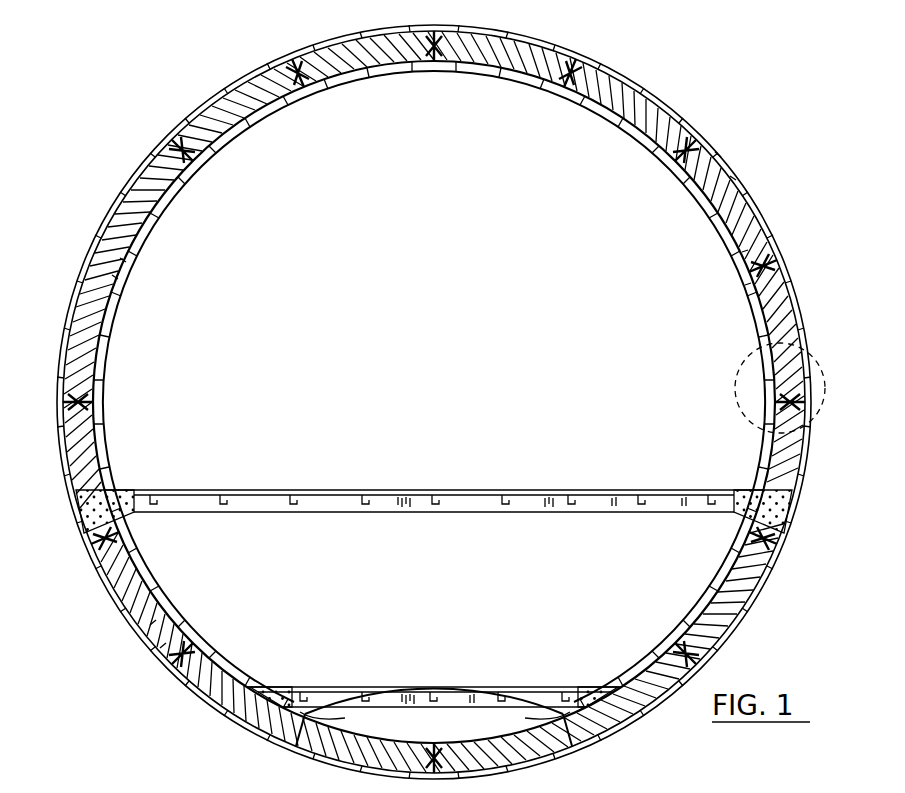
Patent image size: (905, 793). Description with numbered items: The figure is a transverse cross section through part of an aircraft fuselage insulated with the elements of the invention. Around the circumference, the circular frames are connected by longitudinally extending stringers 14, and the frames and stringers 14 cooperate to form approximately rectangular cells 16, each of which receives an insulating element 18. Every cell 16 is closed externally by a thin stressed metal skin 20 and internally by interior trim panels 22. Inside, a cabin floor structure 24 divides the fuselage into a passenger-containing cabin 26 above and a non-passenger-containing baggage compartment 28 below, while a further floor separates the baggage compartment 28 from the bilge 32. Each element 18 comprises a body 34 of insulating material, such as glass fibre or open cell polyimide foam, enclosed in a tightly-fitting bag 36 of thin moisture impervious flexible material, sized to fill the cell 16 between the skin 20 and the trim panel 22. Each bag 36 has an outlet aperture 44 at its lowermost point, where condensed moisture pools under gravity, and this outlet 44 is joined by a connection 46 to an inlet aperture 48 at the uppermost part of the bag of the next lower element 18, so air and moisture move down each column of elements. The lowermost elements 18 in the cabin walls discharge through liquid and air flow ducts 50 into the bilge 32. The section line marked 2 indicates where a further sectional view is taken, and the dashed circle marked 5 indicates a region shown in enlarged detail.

The stringer 14 is at (158, 150).
The cell 16 is at (442, 36).
The insulating element 18 is at (410, 66).
The stressed metal skin 20 is at (118, 197).
The interior trim panel 22 is at (150, 218).
The cabin floor structure 24 is at (333, 488).
The passenger-containing cabin 26 is at (257, 423).
The baggage compartment 28 is at (257, 561).
The bilge 32 is at (383, 715).
The body 34 is at (120, 258).
The bag 36 is at (112, 275).
The outlet aperture 44 is at (742, 252).
The connection 46 is at (289, 90).
The inlet aperture 48 is at (745, 285).
The liquid and air flow duct 50 is at (318, 712).
The section line 2 is at (530, 527).
The detail circle 5 is at (732, 367).